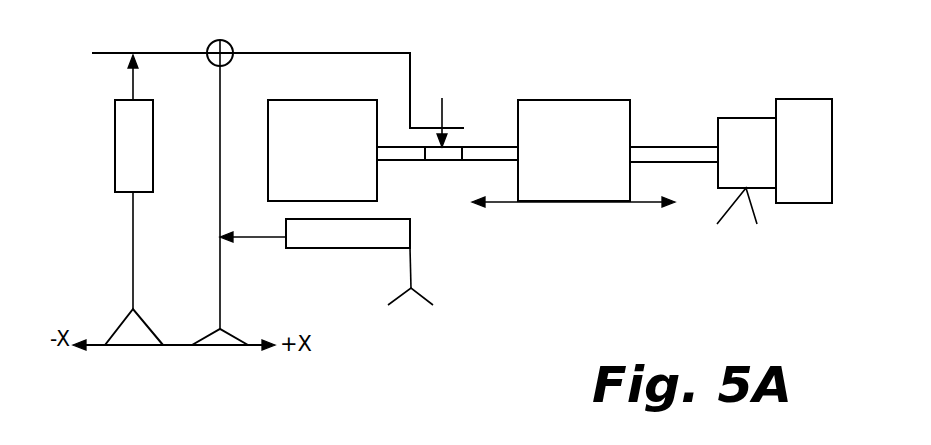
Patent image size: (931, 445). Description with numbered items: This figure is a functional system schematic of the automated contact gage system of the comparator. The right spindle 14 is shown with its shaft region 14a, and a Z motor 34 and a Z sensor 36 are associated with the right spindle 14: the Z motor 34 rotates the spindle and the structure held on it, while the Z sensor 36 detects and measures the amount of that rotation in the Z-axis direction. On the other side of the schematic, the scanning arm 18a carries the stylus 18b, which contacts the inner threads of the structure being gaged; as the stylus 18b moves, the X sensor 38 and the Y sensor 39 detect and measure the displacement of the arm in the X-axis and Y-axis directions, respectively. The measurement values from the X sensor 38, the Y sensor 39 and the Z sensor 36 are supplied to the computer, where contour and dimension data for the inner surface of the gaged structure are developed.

The right spindle 14 is at (594, 100).
The spindle shaft 14a is at (487, 132).
The scanning arm 18a is at (303, 53).
The stylus 18b is at (420, 128).
The Z motor 34 is at (735, 105).
The Z sensor 36 is at (800, 99).
The X sensor 38 is at (412, 242).
The Y sensor 39 is at (153, 136).